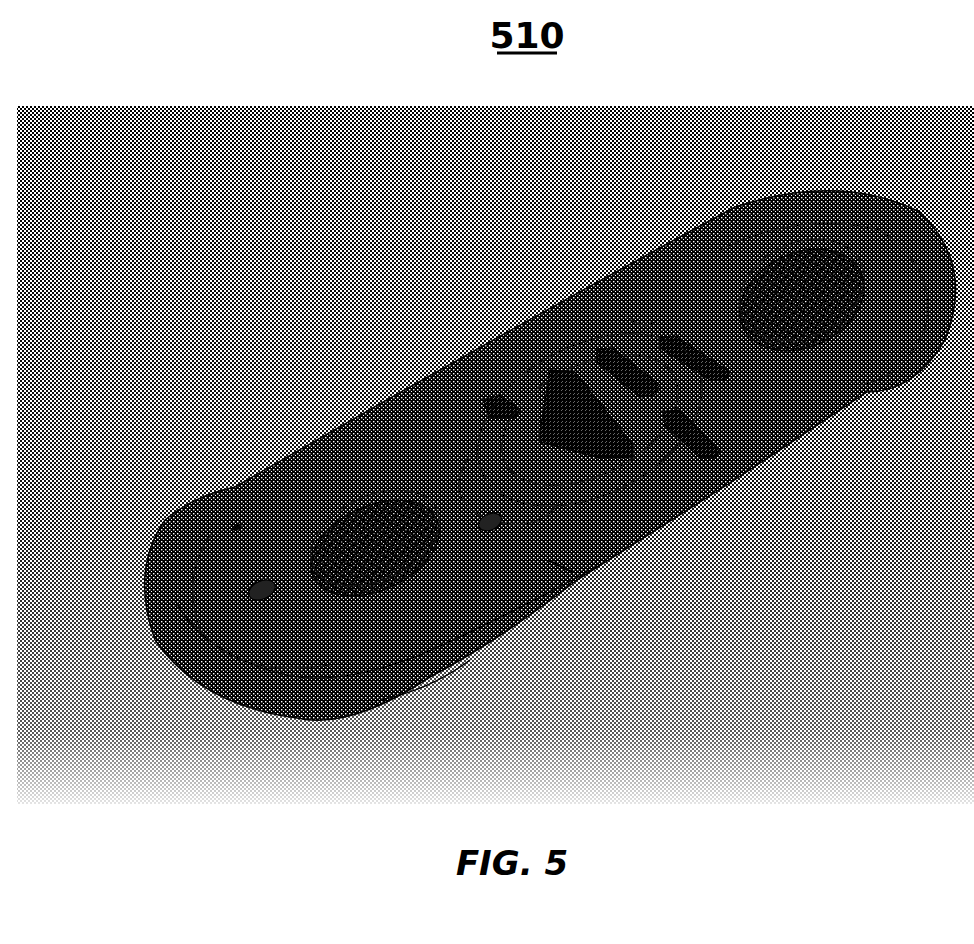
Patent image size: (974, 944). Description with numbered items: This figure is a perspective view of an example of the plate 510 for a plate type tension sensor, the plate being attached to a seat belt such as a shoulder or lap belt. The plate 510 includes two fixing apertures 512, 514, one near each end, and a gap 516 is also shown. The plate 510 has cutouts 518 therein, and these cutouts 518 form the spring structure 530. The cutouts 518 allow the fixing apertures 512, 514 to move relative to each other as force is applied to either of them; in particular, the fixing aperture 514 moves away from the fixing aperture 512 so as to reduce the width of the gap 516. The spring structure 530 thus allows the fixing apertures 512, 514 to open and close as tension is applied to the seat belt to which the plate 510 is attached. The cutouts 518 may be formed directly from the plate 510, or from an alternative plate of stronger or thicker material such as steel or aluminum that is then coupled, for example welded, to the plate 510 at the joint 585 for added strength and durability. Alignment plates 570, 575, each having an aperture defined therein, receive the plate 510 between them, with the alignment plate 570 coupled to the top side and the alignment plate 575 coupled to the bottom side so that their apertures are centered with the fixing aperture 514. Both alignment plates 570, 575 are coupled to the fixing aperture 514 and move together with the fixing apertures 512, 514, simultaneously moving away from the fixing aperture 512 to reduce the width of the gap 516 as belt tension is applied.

The plate 510 is at (415, 372).
The fixing aperture 512 is at (790, 272).
The fixing aperture 514 is at (325, 505).
The gap 516 is at (562, 568).
The cutouts 518 is at (683, 440).
The spring structure 530 is at (470, 445).
The alignment plate 570 is at (248, 530).
The alignment plate 575 is at (428, 677).
The joint 585 is at (638, 322).